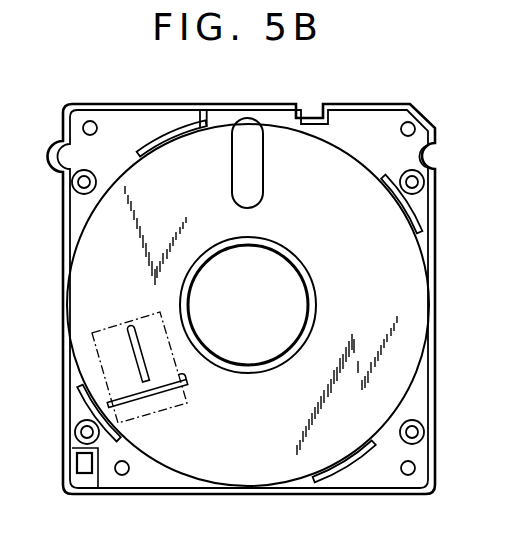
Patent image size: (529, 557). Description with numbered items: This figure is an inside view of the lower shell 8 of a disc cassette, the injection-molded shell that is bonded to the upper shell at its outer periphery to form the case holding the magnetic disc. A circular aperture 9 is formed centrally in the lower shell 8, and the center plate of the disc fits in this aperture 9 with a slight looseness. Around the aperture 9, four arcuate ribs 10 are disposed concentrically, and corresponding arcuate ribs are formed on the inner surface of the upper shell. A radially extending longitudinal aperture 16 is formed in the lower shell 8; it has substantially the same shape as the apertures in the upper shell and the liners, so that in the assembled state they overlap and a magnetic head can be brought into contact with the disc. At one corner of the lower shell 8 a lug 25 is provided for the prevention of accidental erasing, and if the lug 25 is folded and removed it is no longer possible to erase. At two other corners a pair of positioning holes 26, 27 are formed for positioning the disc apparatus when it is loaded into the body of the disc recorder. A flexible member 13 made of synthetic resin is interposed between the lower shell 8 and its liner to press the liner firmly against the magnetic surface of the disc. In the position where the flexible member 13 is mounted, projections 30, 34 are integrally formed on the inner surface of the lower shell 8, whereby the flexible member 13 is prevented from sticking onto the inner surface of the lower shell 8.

The lower shell 8 is at (394, 105).
The circular aperture 9 is at (287, 300).
The arcuate rib 10 is at (184, 122).
The flexible member 13 is at (97, 327).
The longitudinal aperture 16 is at (246, 122).
The lug 25 is at (72, 469).
The positioning hole 26 is at (84, 184).
The positioning hole 27 is at (424, 182).
The projection 30 is at (188, 378).
The projection 34 is at (133, 328).